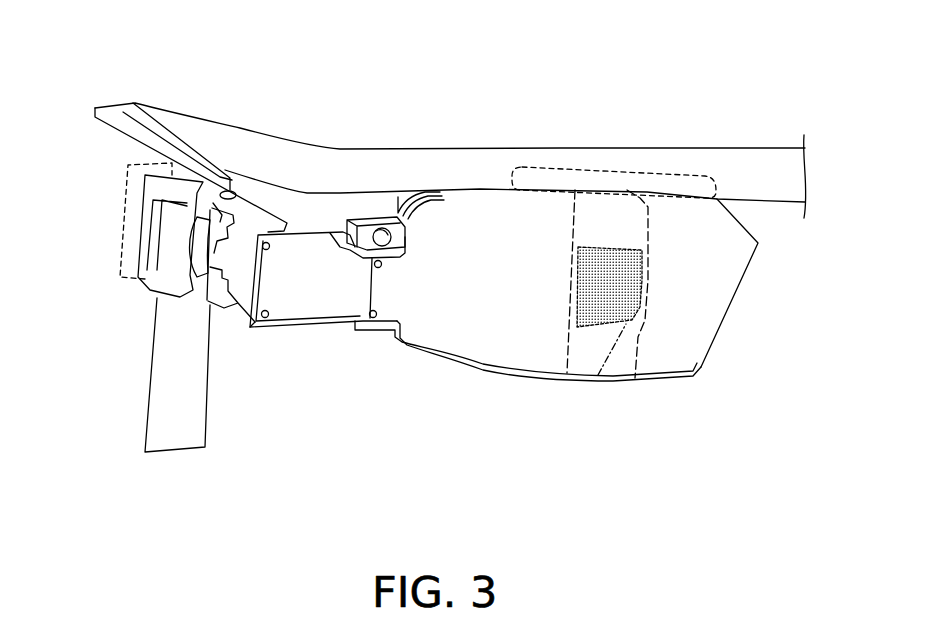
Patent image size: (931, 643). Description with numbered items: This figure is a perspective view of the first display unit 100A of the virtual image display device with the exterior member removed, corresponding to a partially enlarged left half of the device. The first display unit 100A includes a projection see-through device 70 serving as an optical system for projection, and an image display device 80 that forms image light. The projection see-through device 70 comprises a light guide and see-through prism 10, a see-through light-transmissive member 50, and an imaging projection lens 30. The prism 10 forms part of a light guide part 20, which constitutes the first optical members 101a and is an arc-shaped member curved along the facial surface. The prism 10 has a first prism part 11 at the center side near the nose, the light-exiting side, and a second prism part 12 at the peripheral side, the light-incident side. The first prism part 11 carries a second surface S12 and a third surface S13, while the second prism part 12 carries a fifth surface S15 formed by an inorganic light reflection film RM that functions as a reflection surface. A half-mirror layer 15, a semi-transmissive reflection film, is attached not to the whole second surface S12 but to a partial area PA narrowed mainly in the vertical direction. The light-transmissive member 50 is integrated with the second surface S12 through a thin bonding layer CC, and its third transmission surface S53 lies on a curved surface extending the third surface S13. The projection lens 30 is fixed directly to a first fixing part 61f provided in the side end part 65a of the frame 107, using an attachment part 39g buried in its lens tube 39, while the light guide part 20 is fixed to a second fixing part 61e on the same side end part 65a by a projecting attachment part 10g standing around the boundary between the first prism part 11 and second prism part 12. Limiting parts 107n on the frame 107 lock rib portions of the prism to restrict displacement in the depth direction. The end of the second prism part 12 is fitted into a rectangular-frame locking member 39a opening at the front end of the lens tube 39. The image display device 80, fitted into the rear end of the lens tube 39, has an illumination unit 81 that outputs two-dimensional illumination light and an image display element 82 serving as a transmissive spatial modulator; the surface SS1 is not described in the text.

The first display unit 100A is at (738, 82).
The side end part 65a is at (208, 130).
The attachment part 39g is at (217, 220).
The first fixing part 61f is at (247, 207).
The light reflection film RM is at (295, 283).
The fifth surface S15 is at (312, 263).
The second fixing part 61e is at (358, 217).
The attachment part 10g is at (383, 223).
The light guide and see-through prism 10 is at (503, 210).
The third surface S13 is at (523, 267).
The limiting parts 107n is at (602, 167).
The frame 107 is at (667, 160).
The half-mirror layer 15 is at (751, 263).
The partial area PA is at (643, 267).
The see-through light-transmissive member 50 is at (717, 290).
The third transmission surface S53 is at (683, 347).
The second surface S12 is at (623, 323).
The bonding layer CC is at (585, 357).
The surface SS1 is at (563, 394).
The light guide part 20 is at (528, 429).
The first optical members 101a is at (531, 452).
The projection see-through device 70 is at (398, 372).
The first prism part 11 is at (487, 318).
The second prism part 12 is at (327, 293).
The locking member 39a is at (280, 328).
The lens tube 39 is at (200, 297).
The projection lens 30 is at (181, 324).
The image display element 82 is at (147, 280).
The illumination unit 81 is at (123, 210).
The image display device 80 is at (103, 262).